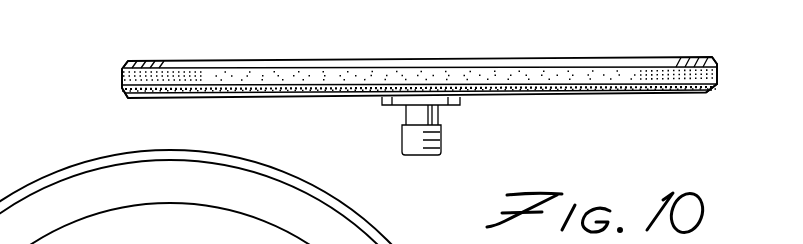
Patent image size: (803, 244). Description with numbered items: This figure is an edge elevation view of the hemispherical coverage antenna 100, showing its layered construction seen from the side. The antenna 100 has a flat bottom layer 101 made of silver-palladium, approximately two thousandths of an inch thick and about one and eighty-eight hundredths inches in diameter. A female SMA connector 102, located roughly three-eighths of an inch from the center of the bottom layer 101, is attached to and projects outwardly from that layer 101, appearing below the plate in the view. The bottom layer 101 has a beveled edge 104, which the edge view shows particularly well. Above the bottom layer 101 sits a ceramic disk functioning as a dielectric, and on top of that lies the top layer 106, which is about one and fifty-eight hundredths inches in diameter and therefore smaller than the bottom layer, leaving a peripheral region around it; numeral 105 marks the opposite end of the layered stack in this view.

The hemispherical coverage antenna 100 is at (423, 57).
The flat bottom layer 101 is at (603, 93).
The female SMA connector 102 is at (440, 107).
The beveled edge 104 is at (708, 92).
The left end edge 105 is at (122, 80).
The top layer 106 is at (557, 58).